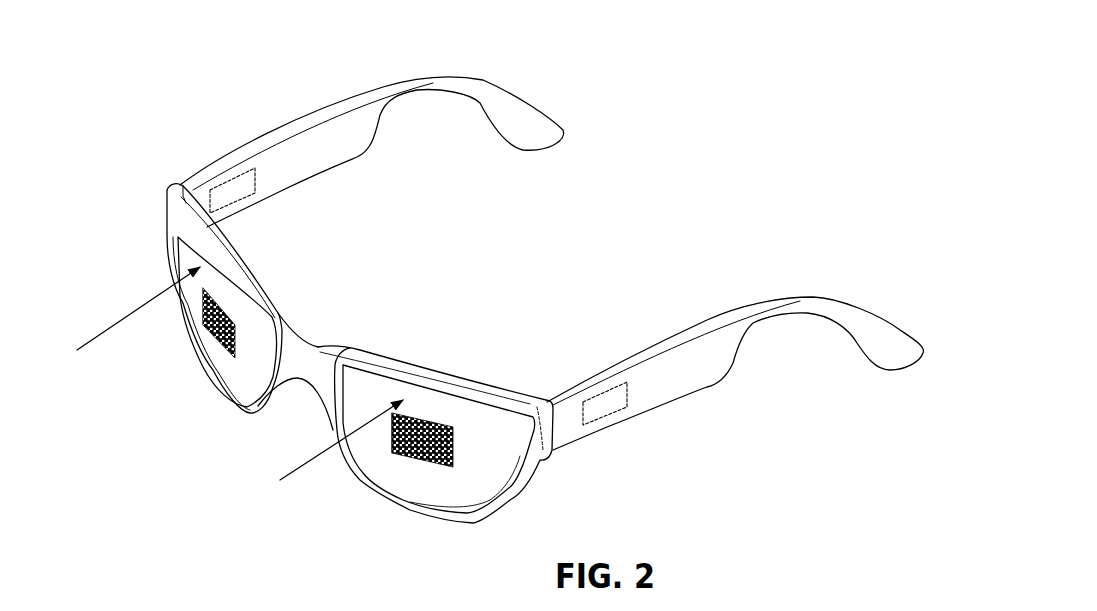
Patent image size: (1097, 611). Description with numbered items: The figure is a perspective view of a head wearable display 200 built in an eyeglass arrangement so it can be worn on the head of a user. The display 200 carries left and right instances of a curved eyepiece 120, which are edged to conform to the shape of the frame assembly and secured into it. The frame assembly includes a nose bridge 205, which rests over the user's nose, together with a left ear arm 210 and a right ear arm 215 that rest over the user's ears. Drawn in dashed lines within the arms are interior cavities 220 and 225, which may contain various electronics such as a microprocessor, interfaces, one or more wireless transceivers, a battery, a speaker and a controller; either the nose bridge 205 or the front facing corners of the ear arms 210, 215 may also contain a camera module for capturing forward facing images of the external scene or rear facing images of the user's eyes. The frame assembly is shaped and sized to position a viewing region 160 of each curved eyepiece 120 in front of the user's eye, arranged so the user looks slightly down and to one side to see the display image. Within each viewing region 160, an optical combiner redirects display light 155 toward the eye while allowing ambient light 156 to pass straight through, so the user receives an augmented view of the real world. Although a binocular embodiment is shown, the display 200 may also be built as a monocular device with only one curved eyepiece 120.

The head wearable display 200 is at (707, 102).
The nose bridge 205 is at (307, 357).
The left ear arm 210 is at (730, 312).
The right ear arm 215 is at (320, 118).
The interior cavity 220 is at (603, 408).
The interior cavity 225 is at (236, 194).
The curved eyepiece 120 is at (192, 315).
The display light 155 is at (218, 327).
The ambient light 156 is at (96, 336).
The viewing region 160 is at (214, 353).